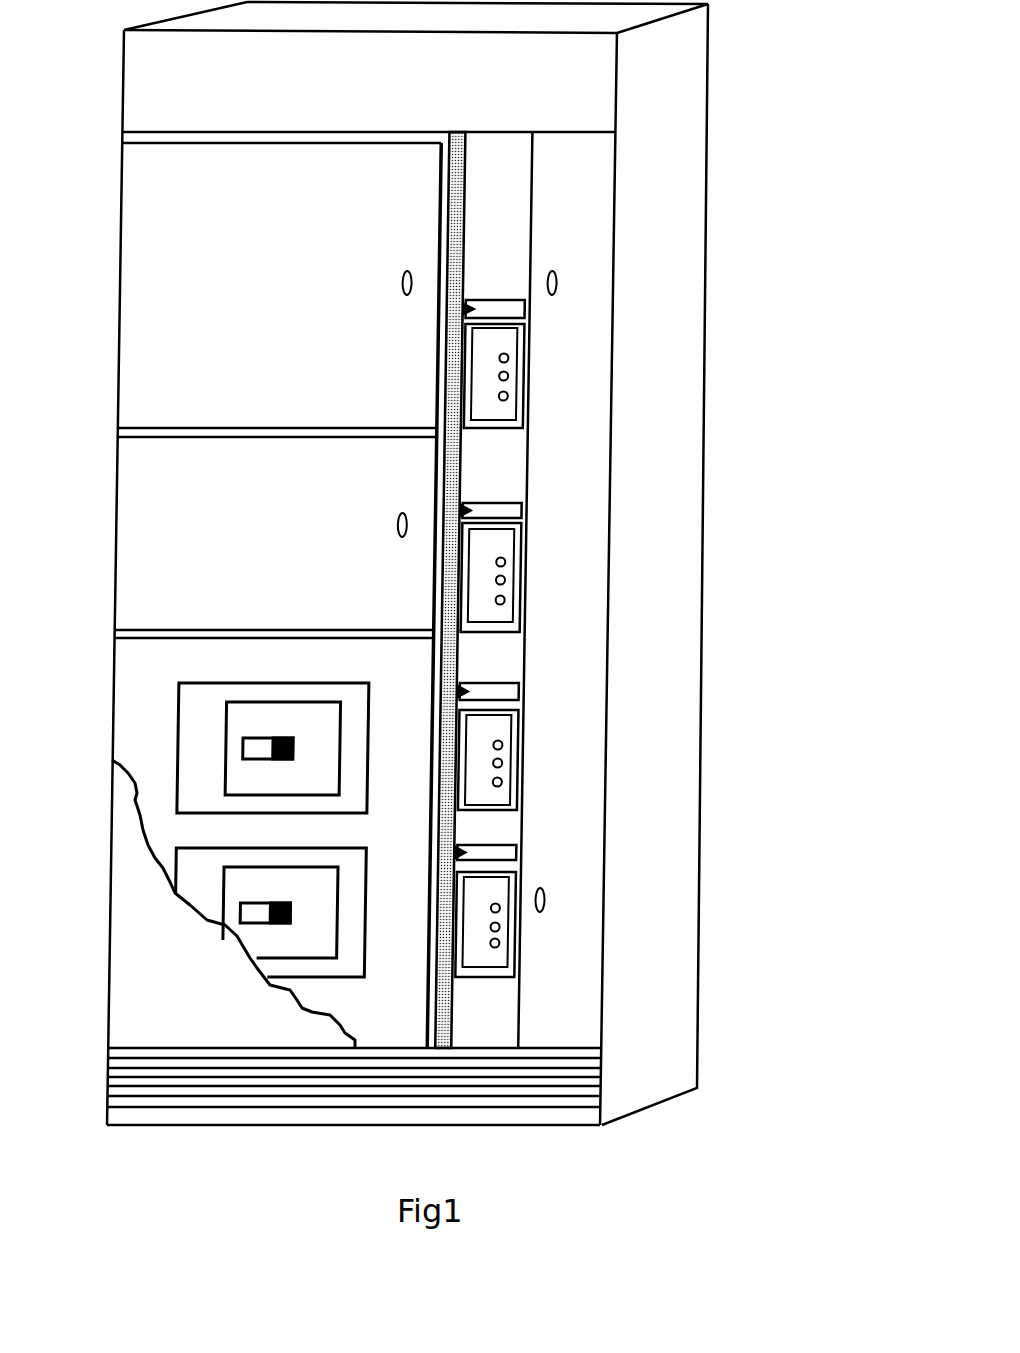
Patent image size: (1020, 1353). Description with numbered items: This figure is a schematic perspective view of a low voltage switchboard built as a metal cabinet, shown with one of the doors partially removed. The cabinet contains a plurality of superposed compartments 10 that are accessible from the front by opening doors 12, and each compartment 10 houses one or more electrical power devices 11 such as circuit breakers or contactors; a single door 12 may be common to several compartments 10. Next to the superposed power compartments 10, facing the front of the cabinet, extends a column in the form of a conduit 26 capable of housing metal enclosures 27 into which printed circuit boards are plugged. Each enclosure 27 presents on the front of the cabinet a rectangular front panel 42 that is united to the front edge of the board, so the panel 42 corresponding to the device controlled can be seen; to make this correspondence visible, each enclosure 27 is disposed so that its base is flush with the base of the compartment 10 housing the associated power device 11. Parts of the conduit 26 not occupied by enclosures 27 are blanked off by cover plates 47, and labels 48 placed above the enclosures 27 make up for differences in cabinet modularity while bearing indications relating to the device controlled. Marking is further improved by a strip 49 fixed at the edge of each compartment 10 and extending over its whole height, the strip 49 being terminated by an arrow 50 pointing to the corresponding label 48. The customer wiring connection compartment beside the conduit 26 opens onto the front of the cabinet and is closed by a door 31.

The compartment 10 is at (271, 807).
The electrical power device 11 is at (517, 830).
The door 12 is at (208, 500).
The conduit 26 is at (533, 244).
The metal enclosure 27 is at (660, 585).
The door 31 is at (562, 548).
The front panel 42 is at (485, 391).
The cover plate 47 is at (487, 528).
The label 48 is at (525, 310).
The strip 49 is at (467, 172).
The arrow 50 is at (659, 487).